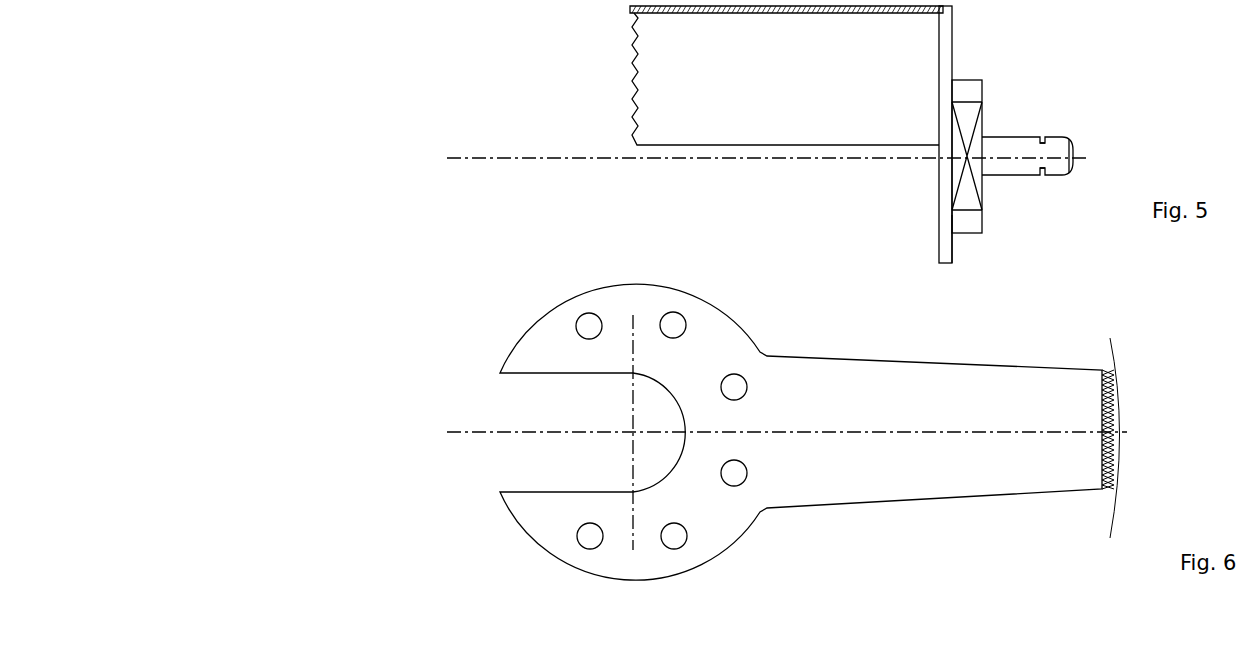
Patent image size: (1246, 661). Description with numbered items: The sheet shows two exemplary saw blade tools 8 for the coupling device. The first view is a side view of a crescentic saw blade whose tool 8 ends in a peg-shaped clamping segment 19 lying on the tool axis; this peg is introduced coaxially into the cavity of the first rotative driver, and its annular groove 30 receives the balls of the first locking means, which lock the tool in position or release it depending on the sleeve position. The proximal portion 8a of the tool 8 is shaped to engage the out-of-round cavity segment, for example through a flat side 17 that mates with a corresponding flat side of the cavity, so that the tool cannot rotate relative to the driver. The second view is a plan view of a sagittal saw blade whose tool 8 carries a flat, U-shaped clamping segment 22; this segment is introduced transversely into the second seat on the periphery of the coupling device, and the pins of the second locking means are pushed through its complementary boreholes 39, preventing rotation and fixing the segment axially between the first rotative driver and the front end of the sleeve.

In FIG. 5, the tool 8 is at (622, 75).
In FIG. 6, the tool 8 is at (1018, 507).
In FIG. 5, the flat side 17 is at (976, 115).
In FIG. 5, the peg-shaped clamping segment 19 is at (1020, 146).
In FIG. 5, the annular groove 30 is at (1045, 147).
In FIG. 5, the proximal portion 8a is at (963, 243).
In FIG. 6, the flat, U-shaped clamping segment 22 is at (512, 527).
In FIG. 6, the complementary boreholes 39 is at (675, 537).